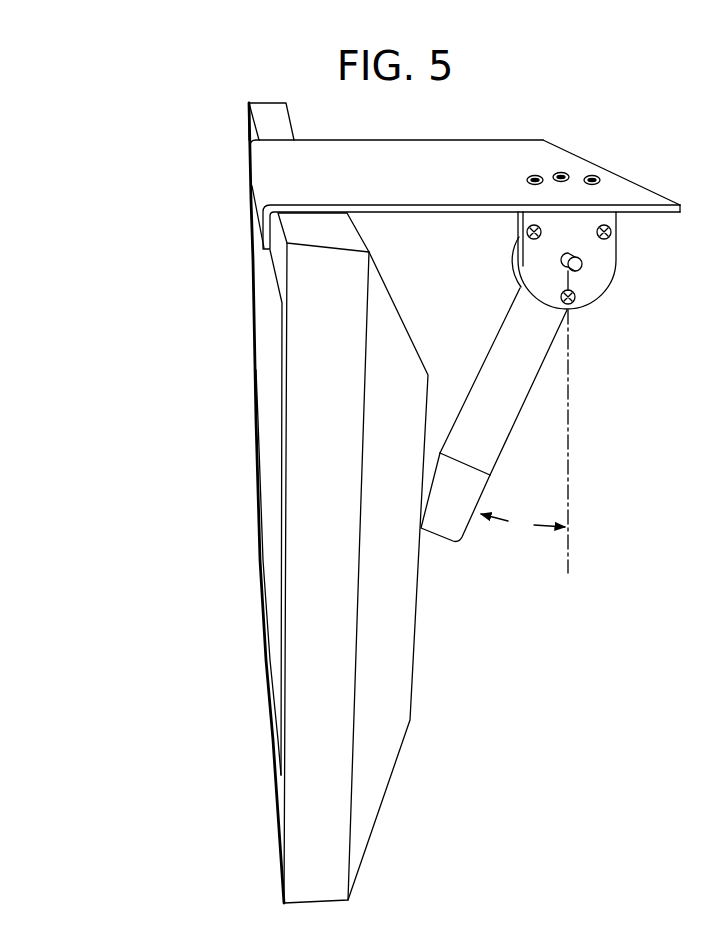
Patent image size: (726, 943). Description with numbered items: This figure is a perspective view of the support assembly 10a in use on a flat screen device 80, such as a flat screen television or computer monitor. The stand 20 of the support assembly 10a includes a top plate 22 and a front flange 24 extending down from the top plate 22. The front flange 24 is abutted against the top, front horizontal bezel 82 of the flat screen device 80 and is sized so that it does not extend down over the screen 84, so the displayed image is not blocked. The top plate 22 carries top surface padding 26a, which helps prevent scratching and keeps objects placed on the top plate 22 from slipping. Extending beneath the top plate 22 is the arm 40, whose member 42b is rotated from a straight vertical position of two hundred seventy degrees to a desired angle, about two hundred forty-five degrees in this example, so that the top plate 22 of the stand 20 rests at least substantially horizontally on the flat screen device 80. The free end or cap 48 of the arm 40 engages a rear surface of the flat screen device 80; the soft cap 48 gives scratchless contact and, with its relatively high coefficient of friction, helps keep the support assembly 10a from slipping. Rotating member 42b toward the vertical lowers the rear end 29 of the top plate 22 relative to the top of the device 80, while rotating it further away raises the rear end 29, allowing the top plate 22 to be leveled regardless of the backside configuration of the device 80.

The support assembly 10a is at (493, 106).
The stand 20 is at (545, 137).
The top plate 22 is at (346, 185).
The rear end 29 is at (622, 177).
The top, front horizontal bezel 82 is at (271, 112).
The front flange 24 is at (201, 465).
The top surface padding 26a is at (260, 190).
The screen 84 is at (272, 340).
The flat screen device 80 is at (311, 366).
The member 42b is at (540, 369).
The arm 40 is at (478, 359).
The free end or cap 48 is at (448, 553).